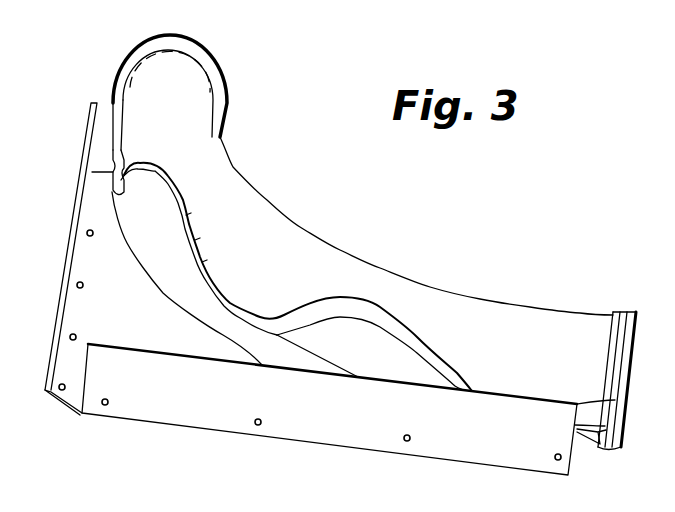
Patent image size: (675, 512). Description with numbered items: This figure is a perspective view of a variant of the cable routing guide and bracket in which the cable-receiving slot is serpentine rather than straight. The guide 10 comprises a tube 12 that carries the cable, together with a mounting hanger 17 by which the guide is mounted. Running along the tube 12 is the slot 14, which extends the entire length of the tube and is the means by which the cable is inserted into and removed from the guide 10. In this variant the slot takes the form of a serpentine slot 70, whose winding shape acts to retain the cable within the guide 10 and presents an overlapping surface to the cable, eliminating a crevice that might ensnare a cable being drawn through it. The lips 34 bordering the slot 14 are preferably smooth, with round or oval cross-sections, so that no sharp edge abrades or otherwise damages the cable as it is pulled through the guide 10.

The guide 10 is at (254, 166).
The tube 12 is at (298, 265).
The slot 14 is at (123, 167).
The mounting hanger 17 is at (203, 403).
The lips 34 is at (365, 301).
The serpentine slot 70 is at (403, 327).